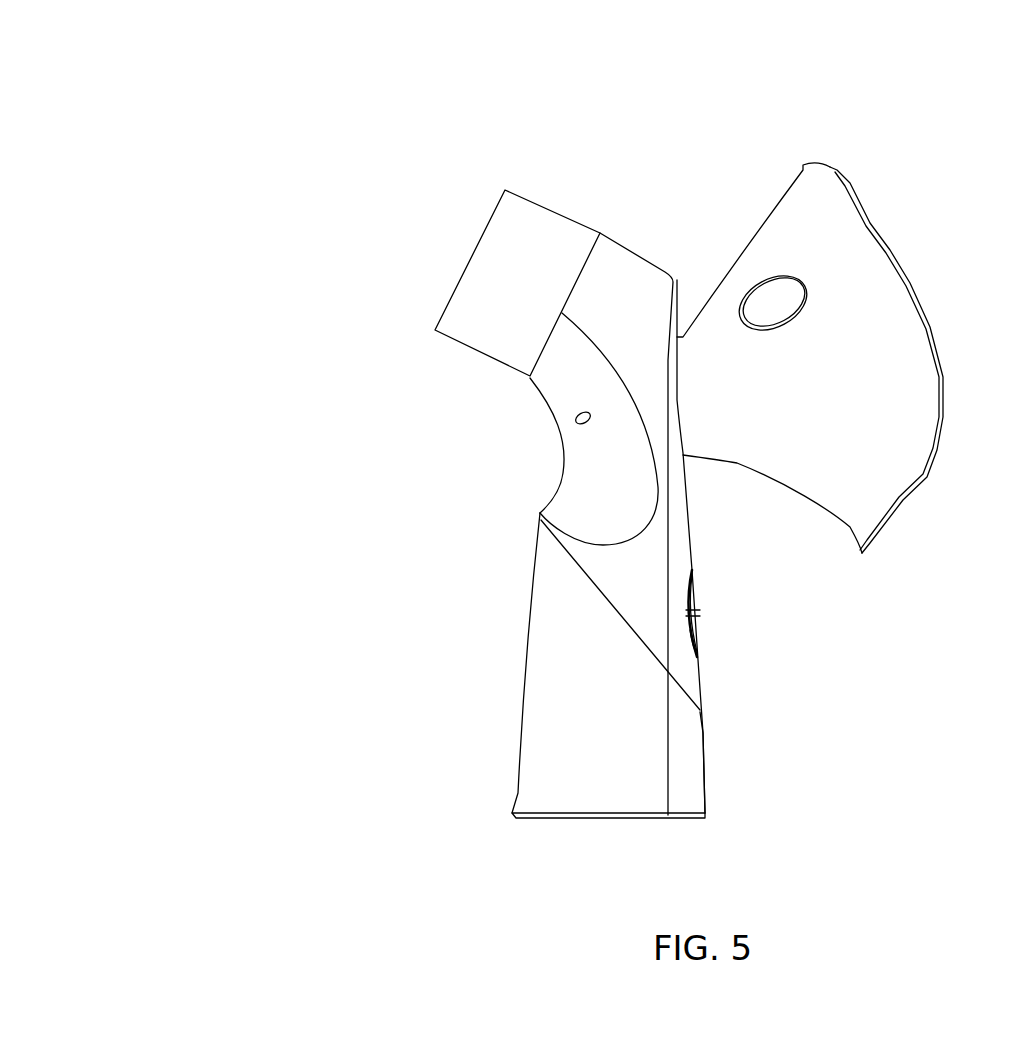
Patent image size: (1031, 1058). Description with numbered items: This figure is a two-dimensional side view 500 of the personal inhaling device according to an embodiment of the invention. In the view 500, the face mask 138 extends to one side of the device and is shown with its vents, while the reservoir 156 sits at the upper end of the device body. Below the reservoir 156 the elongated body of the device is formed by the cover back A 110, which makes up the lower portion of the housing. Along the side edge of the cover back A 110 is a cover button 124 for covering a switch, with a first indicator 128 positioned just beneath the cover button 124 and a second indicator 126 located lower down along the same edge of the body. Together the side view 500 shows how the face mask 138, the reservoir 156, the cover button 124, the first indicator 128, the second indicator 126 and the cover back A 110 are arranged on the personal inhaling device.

The two-dimensional side view 500 is at (168, 93).
The cover back A 110 is at (552, 750).
The cover button 124 is at (700, 592).
The second indicator 126 is at (707, 757).
The first indicator 128 is at (702, 648).
The face mask 138 is at (843, 300).
The reservoir 156 is at (523, 238).